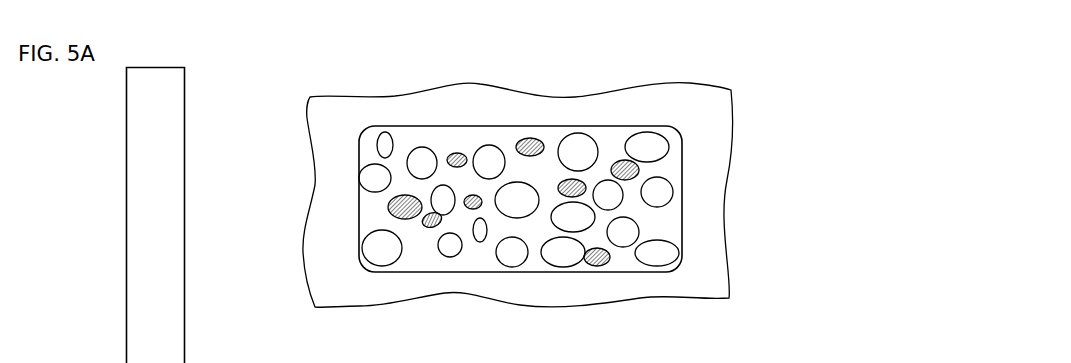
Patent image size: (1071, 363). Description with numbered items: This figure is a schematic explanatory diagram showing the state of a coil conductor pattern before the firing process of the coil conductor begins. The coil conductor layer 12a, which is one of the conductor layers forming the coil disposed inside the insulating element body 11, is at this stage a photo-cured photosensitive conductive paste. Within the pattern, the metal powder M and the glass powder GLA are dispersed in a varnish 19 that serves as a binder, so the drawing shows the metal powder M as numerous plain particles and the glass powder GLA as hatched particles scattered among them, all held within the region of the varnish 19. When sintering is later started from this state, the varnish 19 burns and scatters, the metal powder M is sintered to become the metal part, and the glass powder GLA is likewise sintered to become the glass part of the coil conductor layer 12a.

The element body 11 is at (697, 108).
The coil conductor layer 12a is at (695, 140).
The varnish 19 is at (667, 223).
The metal powder M is at (490, 150).
The glass powder GLA is at (622, 162).